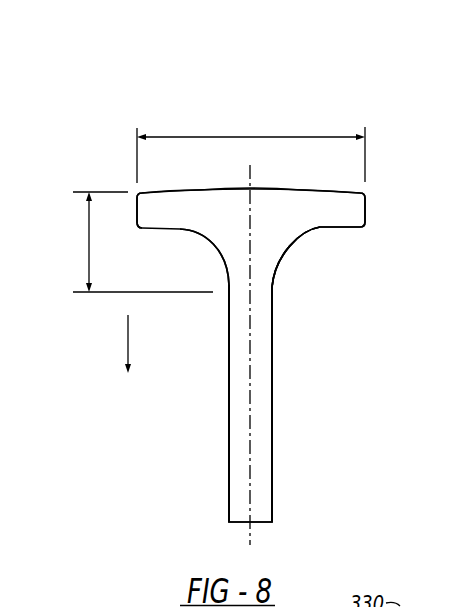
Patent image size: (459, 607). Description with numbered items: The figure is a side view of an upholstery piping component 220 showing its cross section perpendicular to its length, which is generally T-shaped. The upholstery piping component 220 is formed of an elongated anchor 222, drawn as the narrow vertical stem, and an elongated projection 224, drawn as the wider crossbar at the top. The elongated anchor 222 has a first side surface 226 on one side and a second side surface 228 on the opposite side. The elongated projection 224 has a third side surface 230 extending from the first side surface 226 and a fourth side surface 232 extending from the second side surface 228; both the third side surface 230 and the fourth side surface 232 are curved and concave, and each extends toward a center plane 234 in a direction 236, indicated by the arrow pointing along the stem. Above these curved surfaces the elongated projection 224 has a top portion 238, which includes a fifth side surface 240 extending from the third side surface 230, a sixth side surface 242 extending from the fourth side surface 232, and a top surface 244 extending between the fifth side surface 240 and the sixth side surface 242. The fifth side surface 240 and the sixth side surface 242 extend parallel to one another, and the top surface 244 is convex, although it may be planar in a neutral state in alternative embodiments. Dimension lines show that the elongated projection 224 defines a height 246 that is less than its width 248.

The upholstery piping component 220 is at (125, 97).
The elongated anchor 222 is at (262, 437).
The elongated projection 224 is at (320, 220).
The first side surface 226 is at (228, 382).
The second side surface 228 is at (273, 378).
The third side surface 230 is at (212, 250).
The fourth side surface 232 is at (287, 248).
The center plane 234 is at (248, 176).
The direction 236 is at (127, 342).
The top portion 238 is at (158, 209).
The fifth side surface 240 is at (138, 202).
The sixth side surface 242 is at (367, 213).
The top surface 244 is at (343, 193).
The height 246 is at (88, 230).
The width 248 is at (271, 137).